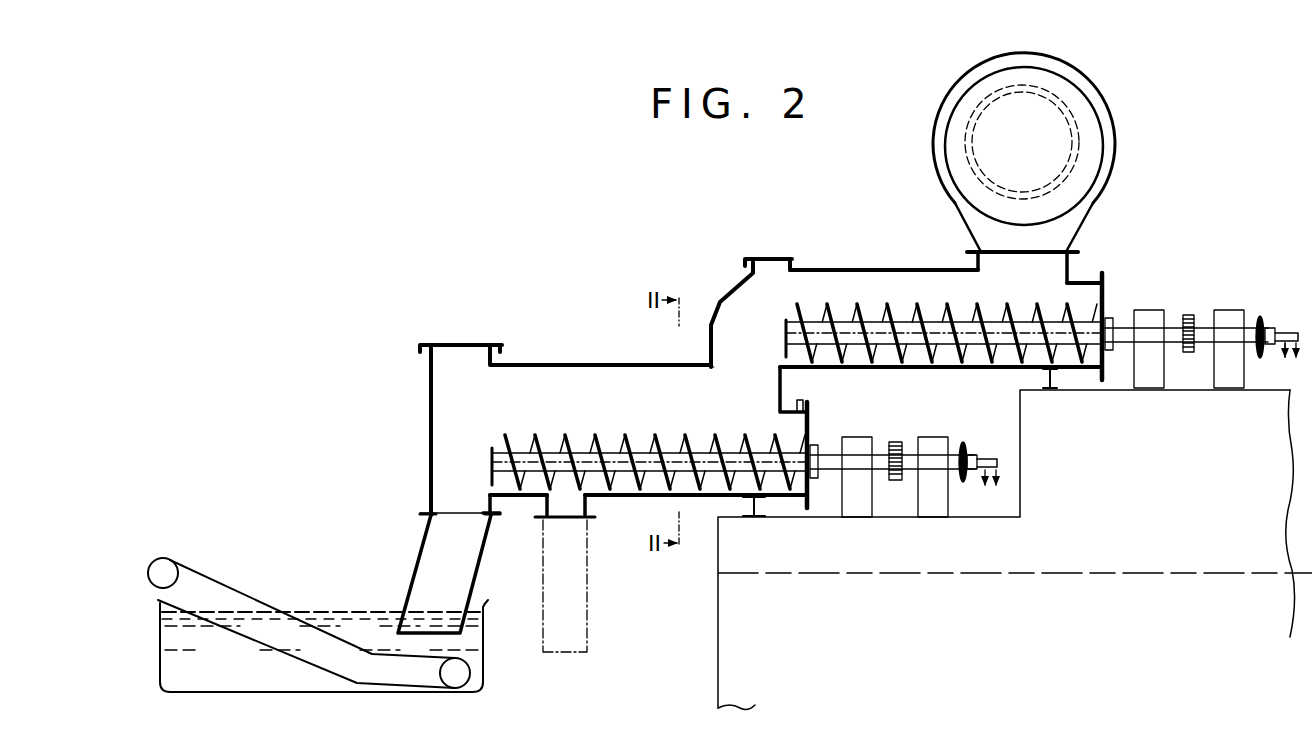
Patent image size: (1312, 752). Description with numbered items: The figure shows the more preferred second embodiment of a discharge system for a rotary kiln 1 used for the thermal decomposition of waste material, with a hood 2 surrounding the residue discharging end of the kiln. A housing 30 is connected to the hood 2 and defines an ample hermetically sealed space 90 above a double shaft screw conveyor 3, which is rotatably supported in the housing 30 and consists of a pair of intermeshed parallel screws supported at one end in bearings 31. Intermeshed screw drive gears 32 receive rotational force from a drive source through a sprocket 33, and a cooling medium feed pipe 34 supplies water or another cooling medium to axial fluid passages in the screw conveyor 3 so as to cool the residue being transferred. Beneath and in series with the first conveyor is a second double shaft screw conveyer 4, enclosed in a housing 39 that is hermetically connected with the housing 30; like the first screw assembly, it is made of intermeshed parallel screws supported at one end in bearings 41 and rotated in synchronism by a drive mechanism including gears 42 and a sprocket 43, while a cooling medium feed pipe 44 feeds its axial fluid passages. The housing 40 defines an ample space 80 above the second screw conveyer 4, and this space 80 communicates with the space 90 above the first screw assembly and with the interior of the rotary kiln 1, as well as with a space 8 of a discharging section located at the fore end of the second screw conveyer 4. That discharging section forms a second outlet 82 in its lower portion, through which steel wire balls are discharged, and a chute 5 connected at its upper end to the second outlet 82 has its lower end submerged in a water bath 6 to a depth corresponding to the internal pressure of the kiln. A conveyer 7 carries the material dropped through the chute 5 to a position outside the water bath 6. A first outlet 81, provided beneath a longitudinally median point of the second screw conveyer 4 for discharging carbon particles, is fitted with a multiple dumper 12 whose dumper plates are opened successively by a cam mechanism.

The rotary kiln 1 is at (1079, 163).
The hood 2 is at (1112, 112).
The double shaft screw conveyor 3 is at (866, 309).
The second double shaft screw conveyer 4 is at (582, 440).
The chute 5 is at (410, 560).
The water bath 6 is at (487, 642).
The conveyer 7 is at (242, 592).
The space of discharging section 8 is at (446, 416).
The multiple dumper 12 is at (591, 600).
The housing 30 is at (841, 265).
The bearings 31 is at (1150, 311).
The screw drive gears 32 is at (1190, 315).
The sprocket 33 is at (1261, 317).
The cooling medium feed pipe 34 is at (1281, 326).
The housing 39 is at (717, 306).
The housing 40 is at (650, 358).
The bearings 41 is at (858, 445).
The gears 42 is at (896, 440).
The sprocket 43 is at (967, 445).
The cooling medium feed pipe 44 is at (993, 457).
The space 80 is at (549, 380).
The first outlet 81 is at (592, 505).
The second outlet 82 is at (497, 499).
The hermetically sealed space 90 is at (808, 285).